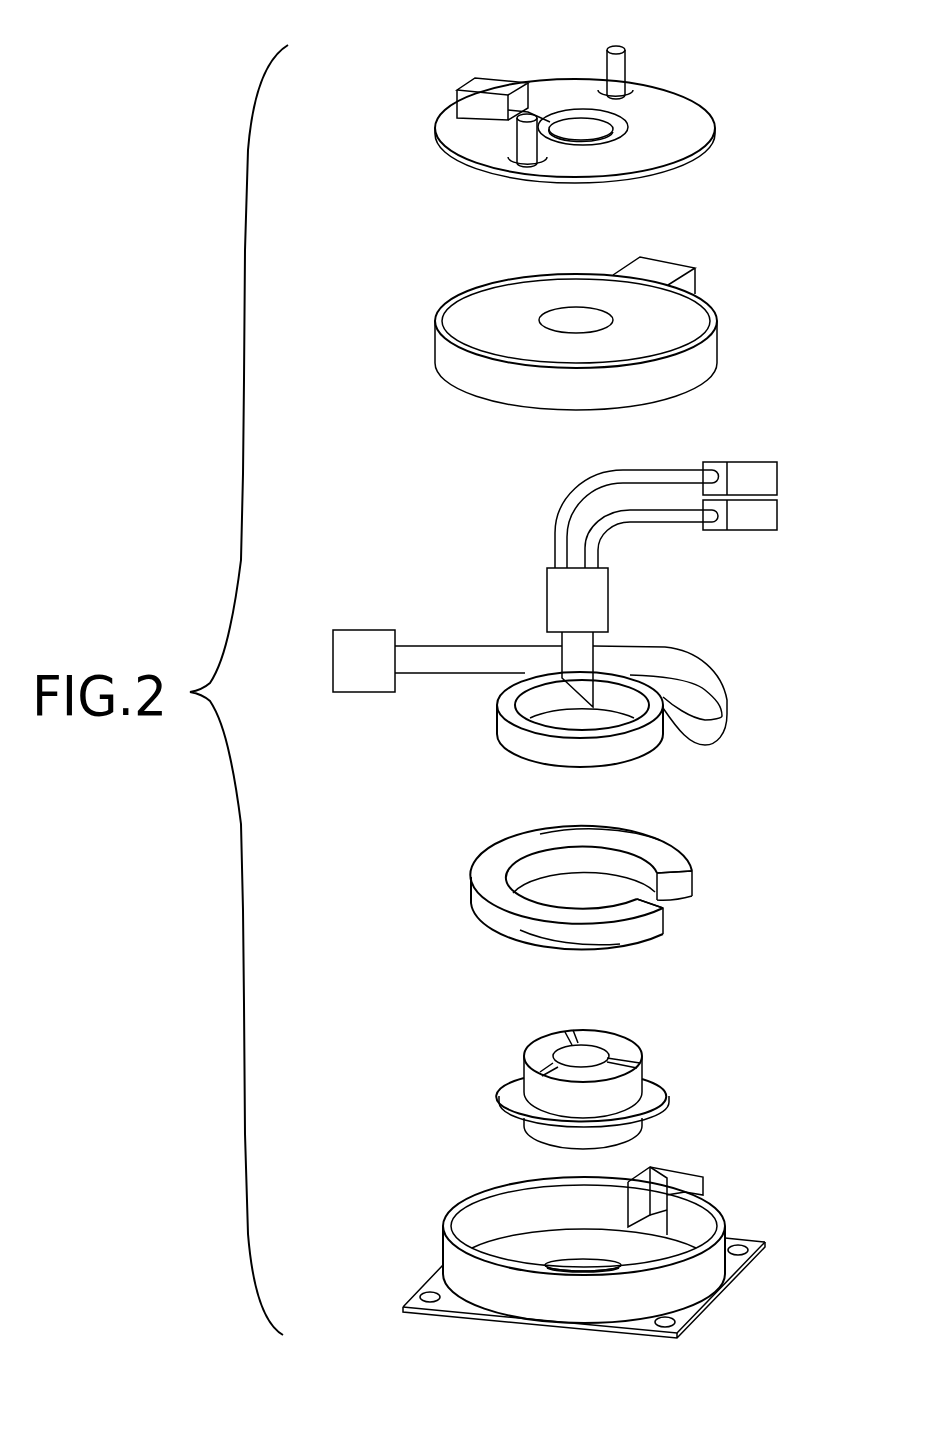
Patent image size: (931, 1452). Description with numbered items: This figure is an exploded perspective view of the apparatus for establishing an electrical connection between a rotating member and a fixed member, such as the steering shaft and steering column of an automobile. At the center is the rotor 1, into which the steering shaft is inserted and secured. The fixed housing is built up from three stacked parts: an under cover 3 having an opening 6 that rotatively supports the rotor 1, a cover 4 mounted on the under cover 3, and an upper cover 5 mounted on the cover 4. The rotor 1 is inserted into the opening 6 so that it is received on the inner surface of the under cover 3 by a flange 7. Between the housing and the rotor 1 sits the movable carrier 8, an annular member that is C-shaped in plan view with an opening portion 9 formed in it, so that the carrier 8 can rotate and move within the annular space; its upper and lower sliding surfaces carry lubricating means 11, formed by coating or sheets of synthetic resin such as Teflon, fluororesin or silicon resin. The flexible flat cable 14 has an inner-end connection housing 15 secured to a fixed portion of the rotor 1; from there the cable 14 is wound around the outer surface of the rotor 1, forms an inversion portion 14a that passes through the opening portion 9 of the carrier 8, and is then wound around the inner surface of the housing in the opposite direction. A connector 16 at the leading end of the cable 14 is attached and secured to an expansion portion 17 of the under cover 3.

The rotor 1 is at (632, 1080).
The under cover 3 is at (717, 1267).
The cover 4 is at (702, 353).
The upper cover 5 is at (677, 112).
The opening 6 is at (573, 1265).
The flange 7 is at (650, 1098).
The carrier 8 is at (477, 910).
The opening portion 9 is at (670, 908).
The lubricating means 11 is at (652, 848).
The flexible flat cable 14 is at (702, 668).
The inversion portion 14a is at (720, 722).
The inner-end connection housing 15 is at (597, 595).
The connector 16 is at (360, 640).
The expansion portion 17 is at (667, 1182).